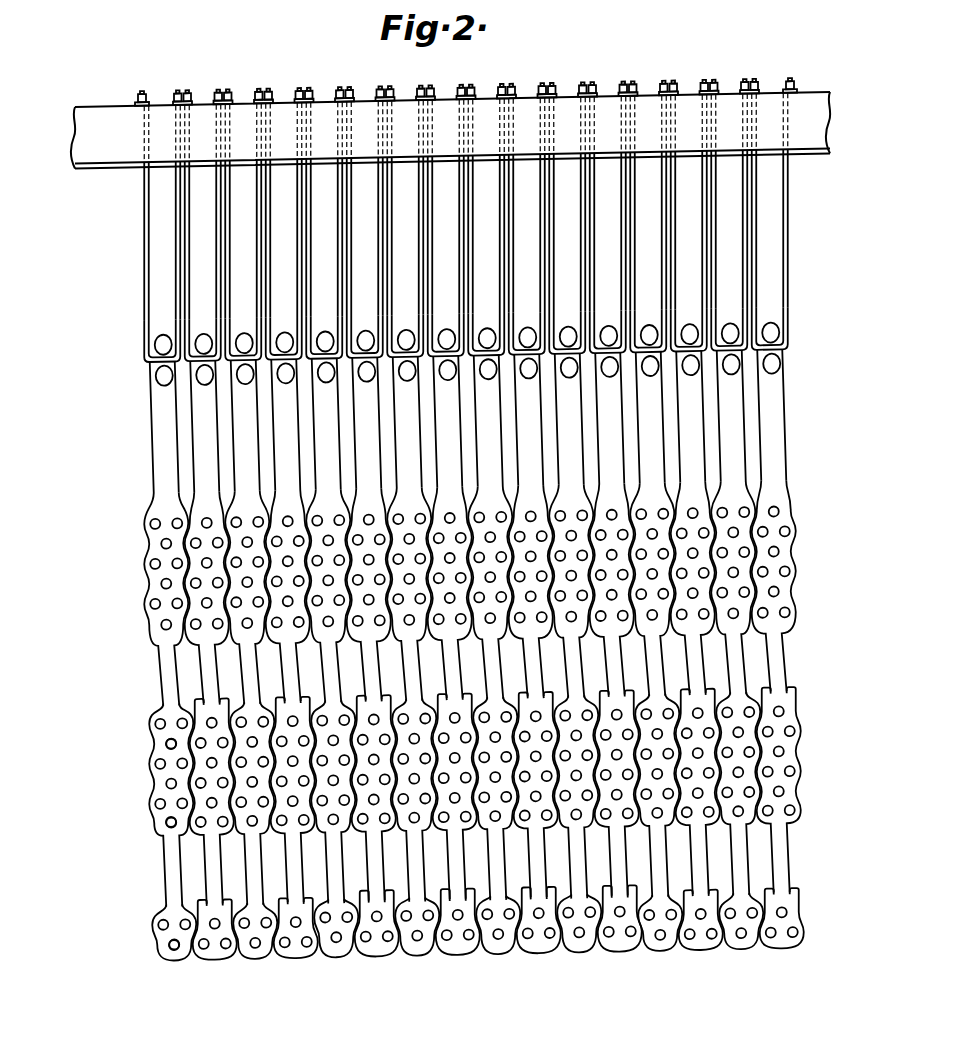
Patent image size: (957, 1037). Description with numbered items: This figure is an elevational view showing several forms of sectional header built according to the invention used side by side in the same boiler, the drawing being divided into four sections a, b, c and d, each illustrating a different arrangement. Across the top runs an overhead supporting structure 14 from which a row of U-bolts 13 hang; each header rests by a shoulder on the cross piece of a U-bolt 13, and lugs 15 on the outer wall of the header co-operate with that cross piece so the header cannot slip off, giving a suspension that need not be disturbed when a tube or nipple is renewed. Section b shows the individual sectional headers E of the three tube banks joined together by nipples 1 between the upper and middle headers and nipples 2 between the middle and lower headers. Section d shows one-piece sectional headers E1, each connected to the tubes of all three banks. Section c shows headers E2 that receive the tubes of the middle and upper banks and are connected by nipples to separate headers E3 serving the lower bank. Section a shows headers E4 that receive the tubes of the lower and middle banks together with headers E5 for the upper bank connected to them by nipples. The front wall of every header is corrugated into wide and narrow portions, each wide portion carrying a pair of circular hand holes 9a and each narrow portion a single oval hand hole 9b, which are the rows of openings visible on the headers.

The overhead supporting structure 14 is at (96, 128).
The U-bolt 13 is at (143, 242).
The lugs 15 is at (198, 366).
The sectional header E is at (364, 982).
The one-piece sectional header E1 is at (780, 653).
The header for middle and upper banks E2 is at (614, 663).
The lower bank header E3 is at (552, 945).
The header for lower and middle banks E4 is at (620, 860).
The upper bank header E5 is at (165, 491).
The nipples 1 is at (455, 663).
The nipples 2 is at (413, 858).
The circular hand holes 9a is at (137, 947).
The oval hand hole 9b is at (140, 972).
The section a is at (313, 963).
The section b is at (320, 960).
The section c is at (637, 955).
The section d is at (805, 950).